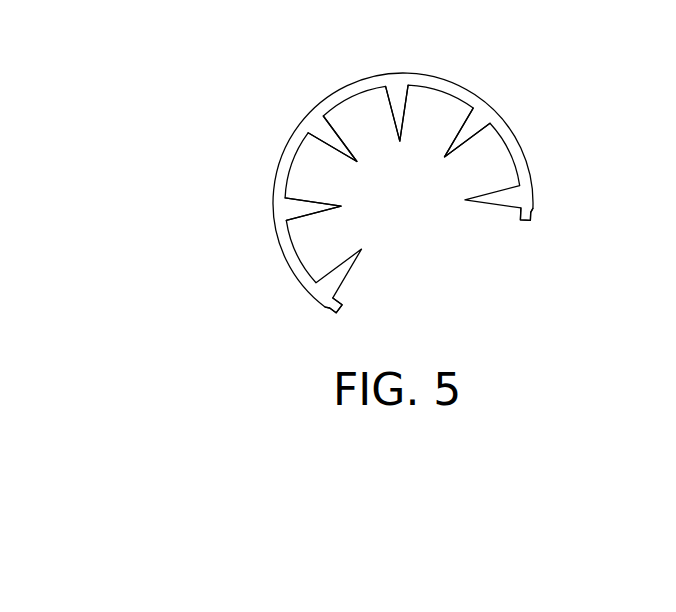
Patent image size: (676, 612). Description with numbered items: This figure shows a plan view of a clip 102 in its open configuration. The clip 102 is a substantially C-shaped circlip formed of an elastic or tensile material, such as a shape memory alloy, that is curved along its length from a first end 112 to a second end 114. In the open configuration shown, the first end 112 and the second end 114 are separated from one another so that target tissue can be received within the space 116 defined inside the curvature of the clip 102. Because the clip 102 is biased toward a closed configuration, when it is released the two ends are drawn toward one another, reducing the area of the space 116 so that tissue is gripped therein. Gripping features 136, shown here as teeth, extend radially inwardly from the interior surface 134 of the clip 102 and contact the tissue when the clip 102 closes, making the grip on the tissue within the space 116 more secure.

The clip 102 is at (261, 90).
The first end 112 is at (332, 315).
The second end 114 is at (533, 213).
The space 116 is at (383, 140).
The interior surface 134 is at (508, 158).
The gripping features 136 is at (322, 125).